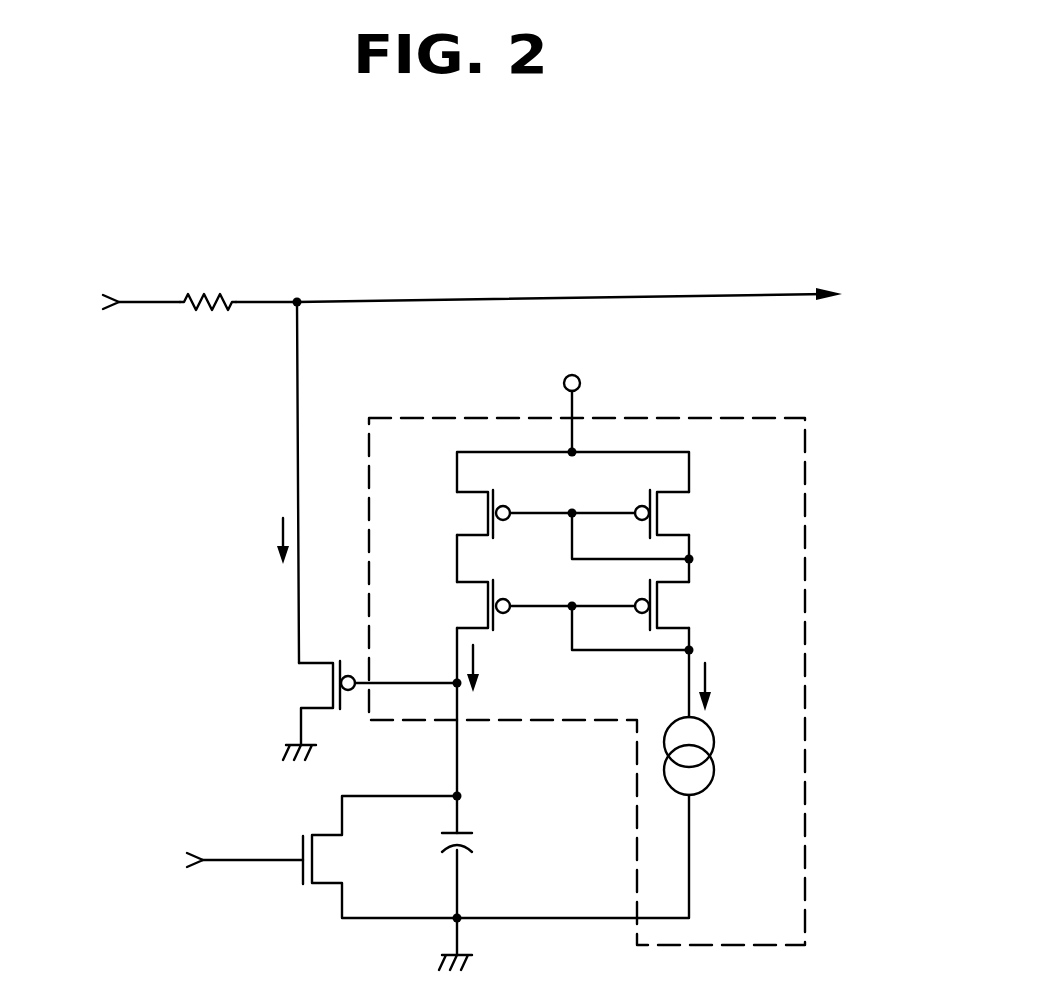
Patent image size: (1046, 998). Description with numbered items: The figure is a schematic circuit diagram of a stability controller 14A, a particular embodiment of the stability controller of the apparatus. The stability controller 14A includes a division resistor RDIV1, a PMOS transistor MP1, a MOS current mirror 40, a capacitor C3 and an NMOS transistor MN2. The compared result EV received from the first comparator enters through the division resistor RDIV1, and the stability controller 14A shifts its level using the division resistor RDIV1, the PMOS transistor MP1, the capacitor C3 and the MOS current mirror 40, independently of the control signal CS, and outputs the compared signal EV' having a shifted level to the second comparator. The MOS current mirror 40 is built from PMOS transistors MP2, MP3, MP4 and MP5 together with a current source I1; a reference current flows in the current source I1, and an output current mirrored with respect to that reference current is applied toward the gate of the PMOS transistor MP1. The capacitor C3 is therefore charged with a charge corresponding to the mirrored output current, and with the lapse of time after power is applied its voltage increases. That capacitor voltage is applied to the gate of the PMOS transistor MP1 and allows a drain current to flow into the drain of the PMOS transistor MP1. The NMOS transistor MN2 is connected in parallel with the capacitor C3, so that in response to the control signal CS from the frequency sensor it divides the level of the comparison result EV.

The stability controller 14A is at (735, 230).
The MOS current mirror 40 is at (805, 612).
The division resistor RDIV1 is at (205, 280).
The PMOS transistor MP1 is at (351, 710).
The PMOS transistor MP2 is at (482, 515).
The PMOS transistor MP3 is at (663, 515).
The PMOS transistor MP4 is at (482, 605).
The PMOS transistor MP5 is at (663, 605).
The NMOS transistor MN2 is at (329, 857).
The capacitor C3 is at (485, 838).
The current source I1 is at (705, 756).